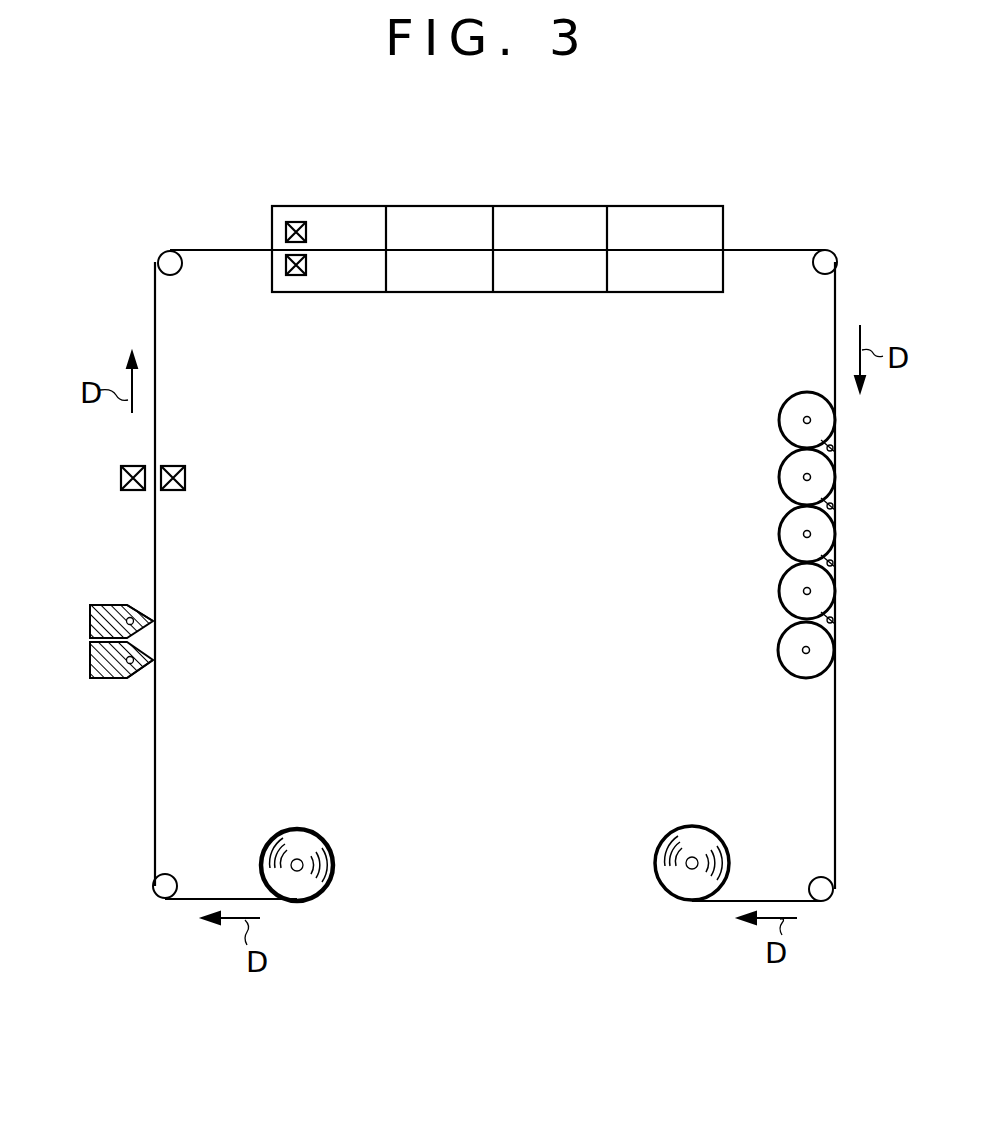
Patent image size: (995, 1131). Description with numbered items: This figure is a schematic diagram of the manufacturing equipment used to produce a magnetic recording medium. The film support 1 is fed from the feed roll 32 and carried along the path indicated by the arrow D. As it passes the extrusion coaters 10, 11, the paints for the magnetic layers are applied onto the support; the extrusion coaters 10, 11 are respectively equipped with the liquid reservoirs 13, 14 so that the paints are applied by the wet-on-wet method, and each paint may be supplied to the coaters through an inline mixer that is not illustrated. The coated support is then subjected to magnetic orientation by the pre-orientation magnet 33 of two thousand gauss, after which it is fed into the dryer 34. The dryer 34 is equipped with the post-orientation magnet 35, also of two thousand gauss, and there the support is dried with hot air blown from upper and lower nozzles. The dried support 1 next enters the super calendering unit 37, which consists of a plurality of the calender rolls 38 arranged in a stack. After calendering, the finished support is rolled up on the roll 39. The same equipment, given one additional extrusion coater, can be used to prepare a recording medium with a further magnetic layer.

The film support 1 is at (155, 785).
The extrusion coater 10 is at (88, 662).
The extrusion coater 11 is at (90, 620).
The liquid reservoir 13 is at (123, 699).
The liquid reservoir 14 is at (130, 588).
The feed roll 32 is at (301, 859).
The pre-orientation magnet 33 is at (186, 488).
The dryer 34 is at (426, 296).
The post-orientation magnet 35 is at (297, 276).
The super calendering unit 37 is at (750, 534).
The calender rolls 38 is at (766, 484).
The roll 39 is at (686, 858).